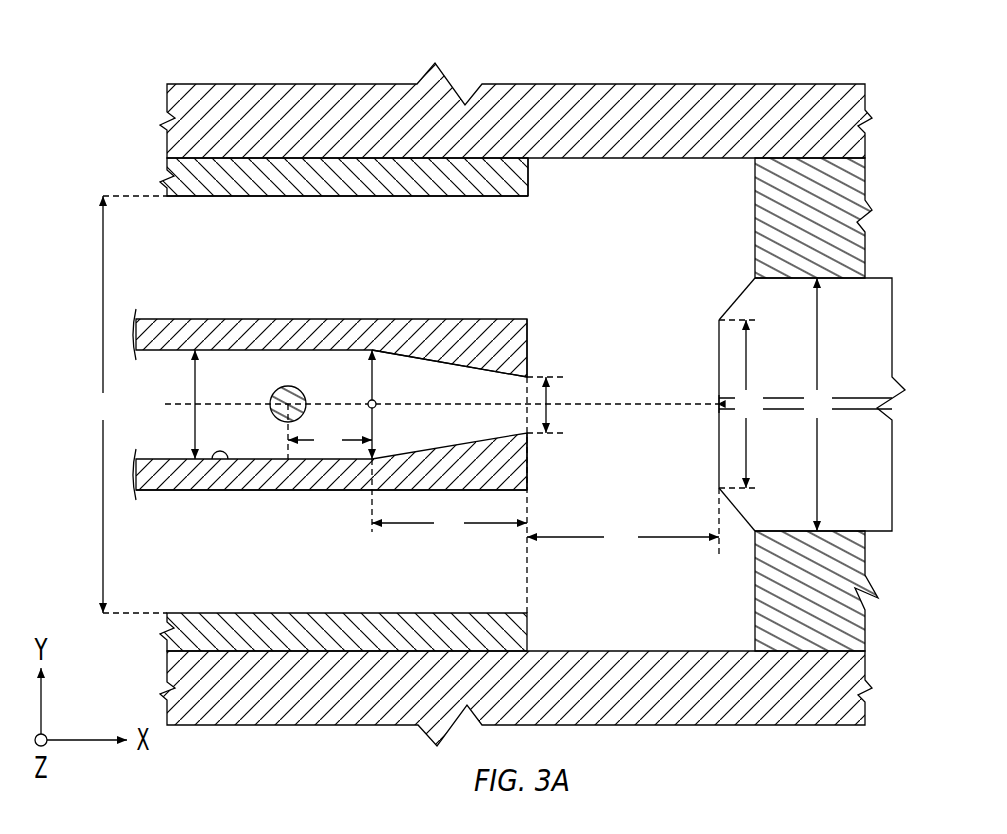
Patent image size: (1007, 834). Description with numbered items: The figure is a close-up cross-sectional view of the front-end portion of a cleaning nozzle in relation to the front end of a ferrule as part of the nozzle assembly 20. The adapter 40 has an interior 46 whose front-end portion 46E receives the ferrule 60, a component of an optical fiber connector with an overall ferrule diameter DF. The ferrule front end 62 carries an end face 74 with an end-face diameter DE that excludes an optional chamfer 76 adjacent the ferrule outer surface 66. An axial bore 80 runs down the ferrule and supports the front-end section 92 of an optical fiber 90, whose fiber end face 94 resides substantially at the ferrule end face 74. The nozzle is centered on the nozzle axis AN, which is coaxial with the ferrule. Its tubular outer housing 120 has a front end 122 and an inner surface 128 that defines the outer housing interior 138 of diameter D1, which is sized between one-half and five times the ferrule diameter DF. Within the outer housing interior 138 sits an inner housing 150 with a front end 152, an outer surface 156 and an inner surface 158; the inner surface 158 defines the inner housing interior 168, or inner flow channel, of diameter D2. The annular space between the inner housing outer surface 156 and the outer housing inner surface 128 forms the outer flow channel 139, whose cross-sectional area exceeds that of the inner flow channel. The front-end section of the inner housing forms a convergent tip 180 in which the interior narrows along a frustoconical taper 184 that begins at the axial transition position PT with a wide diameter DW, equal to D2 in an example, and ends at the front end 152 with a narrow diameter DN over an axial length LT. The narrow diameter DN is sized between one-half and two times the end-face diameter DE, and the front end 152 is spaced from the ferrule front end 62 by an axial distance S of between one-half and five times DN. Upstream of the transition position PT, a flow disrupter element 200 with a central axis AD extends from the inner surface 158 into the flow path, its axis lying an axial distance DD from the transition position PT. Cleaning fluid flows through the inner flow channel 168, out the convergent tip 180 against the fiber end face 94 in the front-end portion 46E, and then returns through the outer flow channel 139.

The nozzle assembly 20 is at (207, 27).
The adapter 40 is at (508, 112).
The interior 46 is at (703, 167).
The front-end portion 46E is at (642, 390).
The ferrule 60 is at (828, 256).
The front end 62 is at (716, 355).
The outer surface 66 is at (872, 277).
The end face 74 is at (722, 487).
The chamfer 76 is at (733, 303).
The axial bore 80 is at (846, 397).
The optical fiber 90 is at (870, 414).
The front-end section 92 is at (793, 403).
The fiber end face 94 is at (717, 406).
The outer housing 120 is at (354, 147).
The front end 122 is at (528, 178).
The inner surface 128 is at (186, 198).
The outer housing interior 138 is at (359, 197).
The outer flow channel 139 is at (292, 297).
The inner housing 150 is at (276, 294).
The front end 152 is at (528, 337).
The outer surface 156 is at (286, 491).
The inner surface 158 is at (214, 461).
The inner housing interior 168 is at (244, 382).
The convergent tip 180 is at (521, 299).
The taper 184 is at (441, 356).
The flow disrupter element 200 is at (297, 388).
The diameter of outer housing interior D1 is at (127, 404).
The diameter of inner housing interior D2 is at (193, 384).
The wide diameter DW is at (368, 393).
The axial distance DD is at (330, 440).
The central axis AD is at (281, 416).
The axial transition position PT is at (376, 410).
The narrow diameter DN is at (551, 396).
The axial length LT is at (449, 495).
The axial distance S is at (623, 522).
The end-face diameter DE is at (748, 404).
The ferrule diameter DF is at (818, 404).
The nozzle axis AN is at (596, 406).